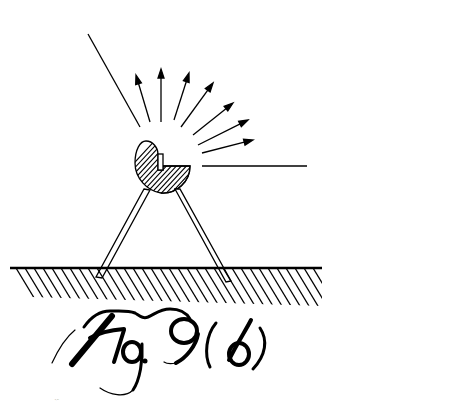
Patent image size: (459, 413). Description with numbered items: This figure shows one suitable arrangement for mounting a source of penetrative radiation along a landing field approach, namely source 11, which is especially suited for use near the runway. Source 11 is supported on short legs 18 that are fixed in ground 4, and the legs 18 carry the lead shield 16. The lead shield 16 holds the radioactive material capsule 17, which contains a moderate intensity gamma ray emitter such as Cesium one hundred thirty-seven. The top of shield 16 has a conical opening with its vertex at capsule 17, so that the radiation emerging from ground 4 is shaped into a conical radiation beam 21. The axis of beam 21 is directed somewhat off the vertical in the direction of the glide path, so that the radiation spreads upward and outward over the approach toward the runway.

The ground 4 is at (268, 268).
The source 11 is at (191, 182).
The lead shield 16 is at (137, 171).
The radioactive material capsule 17 is at (158, 153).
The legs 18 is at (118, 238).
The conical radiation beam 21 is at (223, 121).